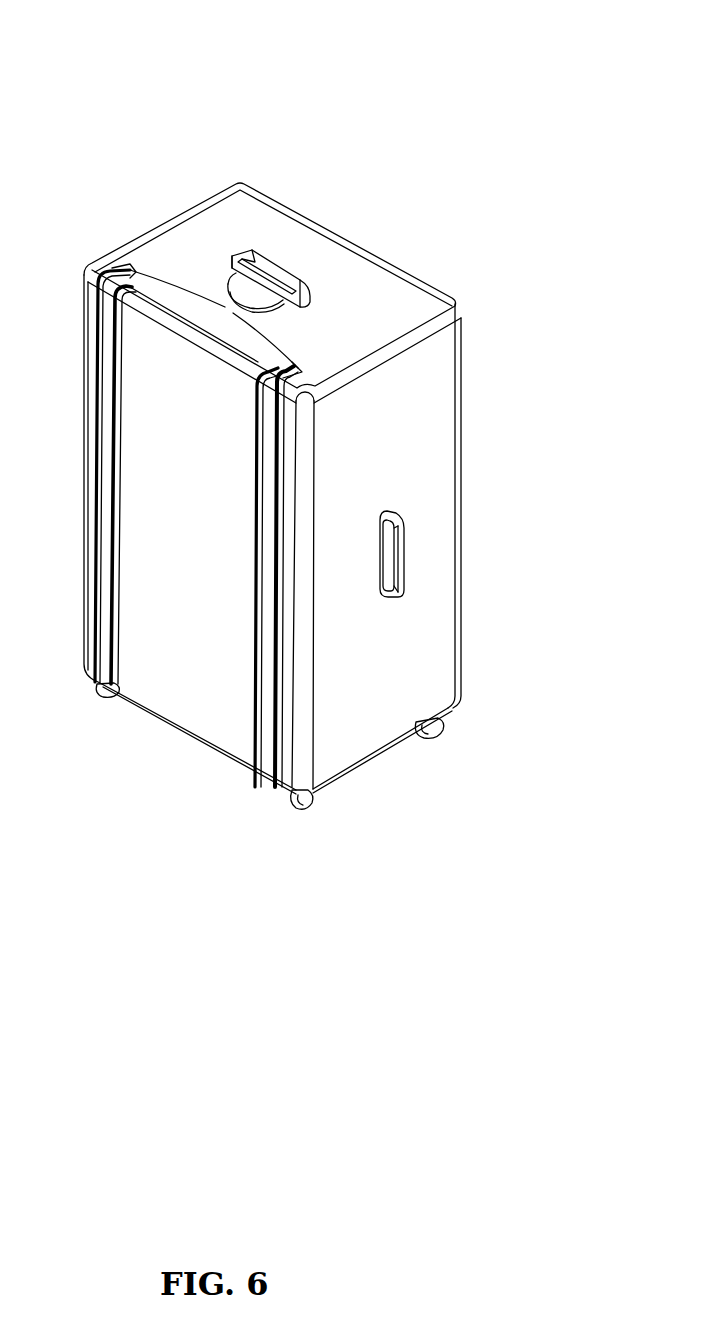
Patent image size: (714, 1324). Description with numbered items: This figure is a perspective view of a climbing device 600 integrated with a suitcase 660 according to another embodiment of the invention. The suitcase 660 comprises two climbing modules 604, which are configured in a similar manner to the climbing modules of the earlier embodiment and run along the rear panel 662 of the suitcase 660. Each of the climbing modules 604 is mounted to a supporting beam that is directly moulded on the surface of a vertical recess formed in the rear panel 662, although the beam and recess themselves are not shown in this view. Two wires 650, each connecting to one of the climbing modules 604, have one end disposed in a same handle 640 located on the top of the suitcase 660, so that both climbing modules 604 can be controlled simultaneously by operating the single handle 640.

The climbing device 600 is at (275, 80).
The climbing modules 604 is at (103, 653).
The handle 640 is at (250, 293).
The wires 650 is at (189, 292).
The suitcase 660 is at (459, 468).
The rear panel 662 is at (208, 675).